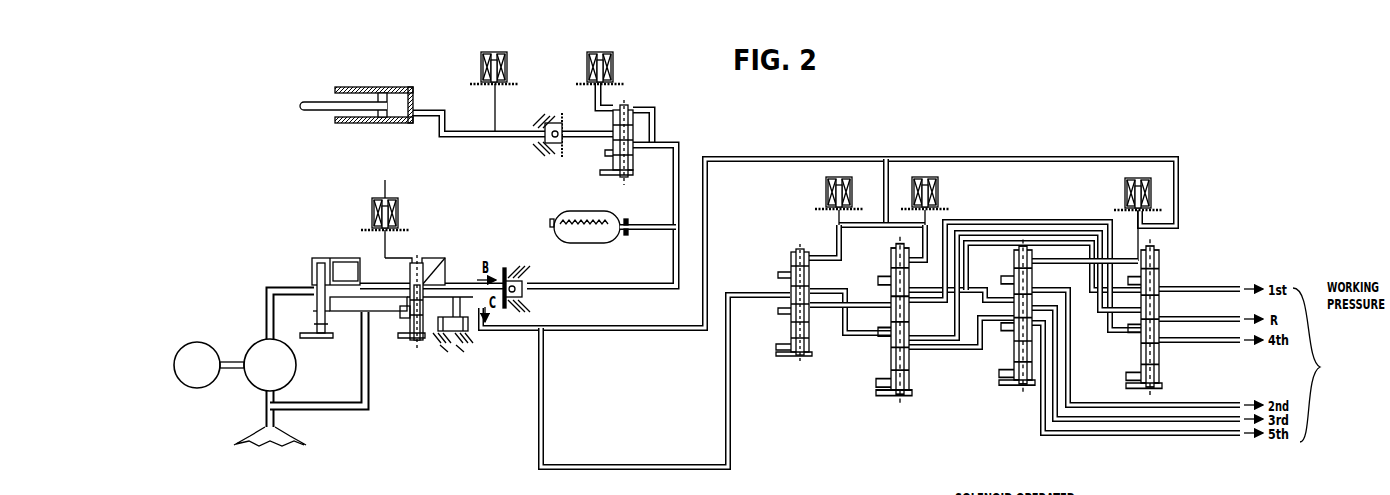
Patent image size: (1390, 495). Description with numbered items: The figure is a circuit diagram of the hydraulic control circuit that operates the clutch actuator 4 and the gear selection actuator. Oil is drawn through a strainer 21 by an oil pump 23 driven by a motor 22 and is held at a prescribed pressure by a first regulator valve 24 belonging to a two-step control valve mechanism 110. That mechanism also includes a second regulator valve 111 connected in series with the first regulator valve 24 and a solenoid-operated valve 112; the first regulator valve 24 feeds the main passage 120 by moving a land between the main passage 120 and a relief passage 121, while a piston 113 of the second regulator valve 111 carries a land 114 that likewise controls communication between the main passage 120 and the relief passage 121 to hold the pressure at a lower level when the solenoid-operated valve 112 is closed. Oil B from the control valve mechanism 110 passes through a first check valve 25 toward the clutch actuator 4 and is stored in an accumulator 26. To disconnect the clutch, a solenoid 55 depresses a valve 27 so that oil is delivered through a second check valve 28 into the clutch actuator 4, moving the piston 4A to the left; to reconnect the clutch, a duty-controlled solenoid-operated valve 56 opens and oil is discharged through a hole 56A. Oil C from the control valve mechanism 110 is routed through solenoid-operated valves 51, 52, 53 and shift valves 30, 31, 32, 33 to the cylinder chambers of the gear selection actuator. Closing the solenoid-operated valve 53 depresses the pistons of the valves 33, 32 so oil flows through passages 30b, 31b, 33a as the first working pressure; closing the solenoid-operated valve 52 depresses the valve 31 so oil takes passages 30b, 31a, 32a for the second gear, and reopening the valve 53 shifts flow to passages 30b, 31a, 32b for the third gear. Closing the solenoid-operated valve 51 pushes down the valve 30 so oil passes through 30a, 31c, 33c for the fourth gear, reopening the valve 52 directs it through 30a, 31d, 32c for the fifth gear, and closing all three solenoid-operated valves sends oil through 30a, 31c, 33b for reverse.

The clutch actuator 4 is at (380, 82).
The piston 4A is at (358, 111).
The strainer 21 is at (288, 441).
The motor 22 is at (204, 348).
The oil pump 23 is at (289, 362).
The first regulator valve 24 is at (312, 277).
The first check valve 25 is at (519, 274).
The accumulator 26 is at (592, 243).
The valve 27 is at (613, 158).
The second check valve 28 is at (545, 158).
The shift valve 30 is at (790, 356).
The passage 30a is at (826, 290).
The passage 30b is at (817, 318).
The shift valve 31 is at (890, 392).
The passage 31a is at (913, 290).
The passage 31b is at (913, 300).
The passage 31c is at (912, 341).
The passage 31d is at (918, 362).
The shift valve 32 is at (1014, 380).
The passage 32a is at (1048, 288).
The passage 32b is at (1048, 304).
The passage 32c is at (1045, 326).
The shift valve 33 is at (1138, 384).
The passage 33a is at (1165, 290).
The passage 33b is at (1163, 318).
The passage 33c is at (1162, 345).
The solenoid-operated valve 51 is at (853, 190).
The solenoid-operated valve 52 is at (938, 190).
The solenoid-operated valve 53 is at (1125, 193).
The solenoid 55 is at (613, 52).
The solenoid-operated valve 56 is at (507, 52).
The hole 56A is at (498, 88).
The two-step control valve mechanism 110 is at (447, 236).
The second regulator valve 111 is at (410, 342).
The solenoid-operated valve 112 is at (398, 206).
The piston 113 is at (447, 265).
The land 114 is at (400, 312).
The main passage 120 is at (390, 292).
The relief passage 121 is at (360, 376).